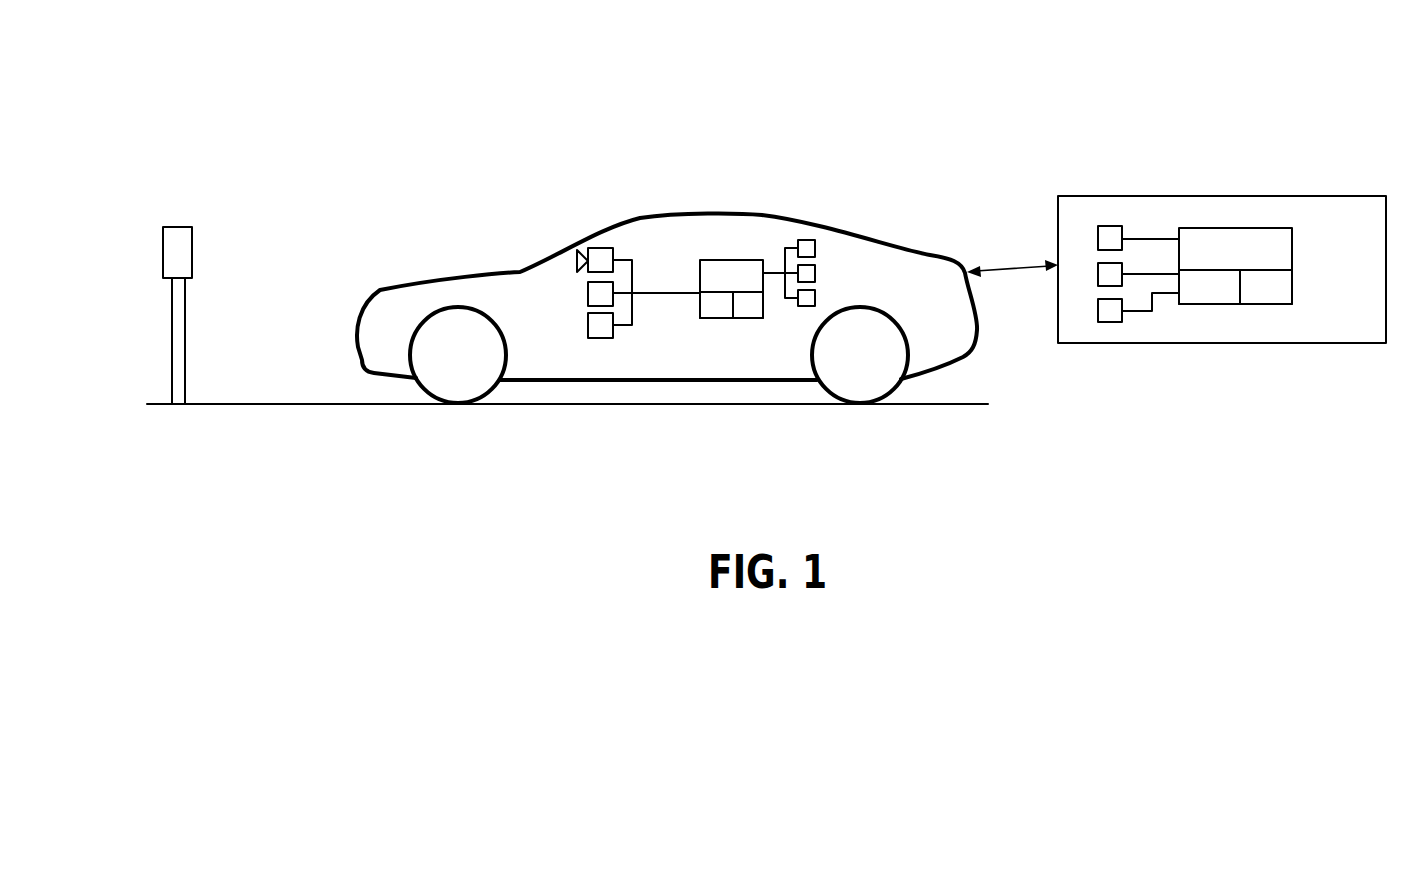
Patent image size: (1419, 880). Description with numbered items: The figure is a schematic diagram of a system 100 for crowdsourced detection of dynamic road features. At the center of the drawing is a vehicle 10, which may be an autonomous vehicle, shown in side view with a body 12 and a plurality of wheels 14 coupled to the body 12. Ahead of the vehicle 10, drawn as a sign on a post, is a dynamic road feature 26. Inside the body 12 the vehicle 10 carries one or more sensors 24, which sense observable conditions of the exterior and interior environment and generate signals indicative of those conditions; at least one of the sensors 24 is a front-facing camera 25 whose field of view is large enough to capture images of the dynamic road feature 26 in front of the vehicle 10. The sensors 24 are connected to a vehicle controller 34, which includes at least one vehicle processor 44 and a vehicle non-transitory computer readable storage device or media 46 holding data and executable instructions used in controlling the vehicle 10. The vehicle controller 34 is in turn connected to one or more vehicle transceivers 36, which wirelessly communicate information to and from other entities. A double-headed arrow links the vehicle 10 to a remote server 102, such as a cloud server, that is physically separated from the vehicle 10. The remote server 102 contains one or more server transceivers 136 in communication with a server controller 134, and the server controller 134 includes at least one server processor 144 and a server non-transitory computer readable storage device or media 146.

The system 100 is at (1110, 66).
The vehicle 10 is at (749, 168).
The body 12 is at (640, 220).
The wheels 14 is at (459, 384).
The sensors 24 is at (570, 402).
The front-facing camera 25 is at (571, 260).
The dynamic road feature 26 is at (210, 205).
The vehicle controller 34 is at (707, 260).
The vehicle transceivers 36 is at (804, 240).
The vehicle processor 44 is at (720, 318).
The vehicle non-transitory computer readable storage device or media 46 is at (752, 318).
The remote server 102 is at (1252, 196).
The server controller 134 is at (1272, 228).
The server transceivers 136 is at (1075, 383).
The server processor 144 is at (1213, 304).
The server non-transitory computer readable storage device or media 146 is at (1273, 304).